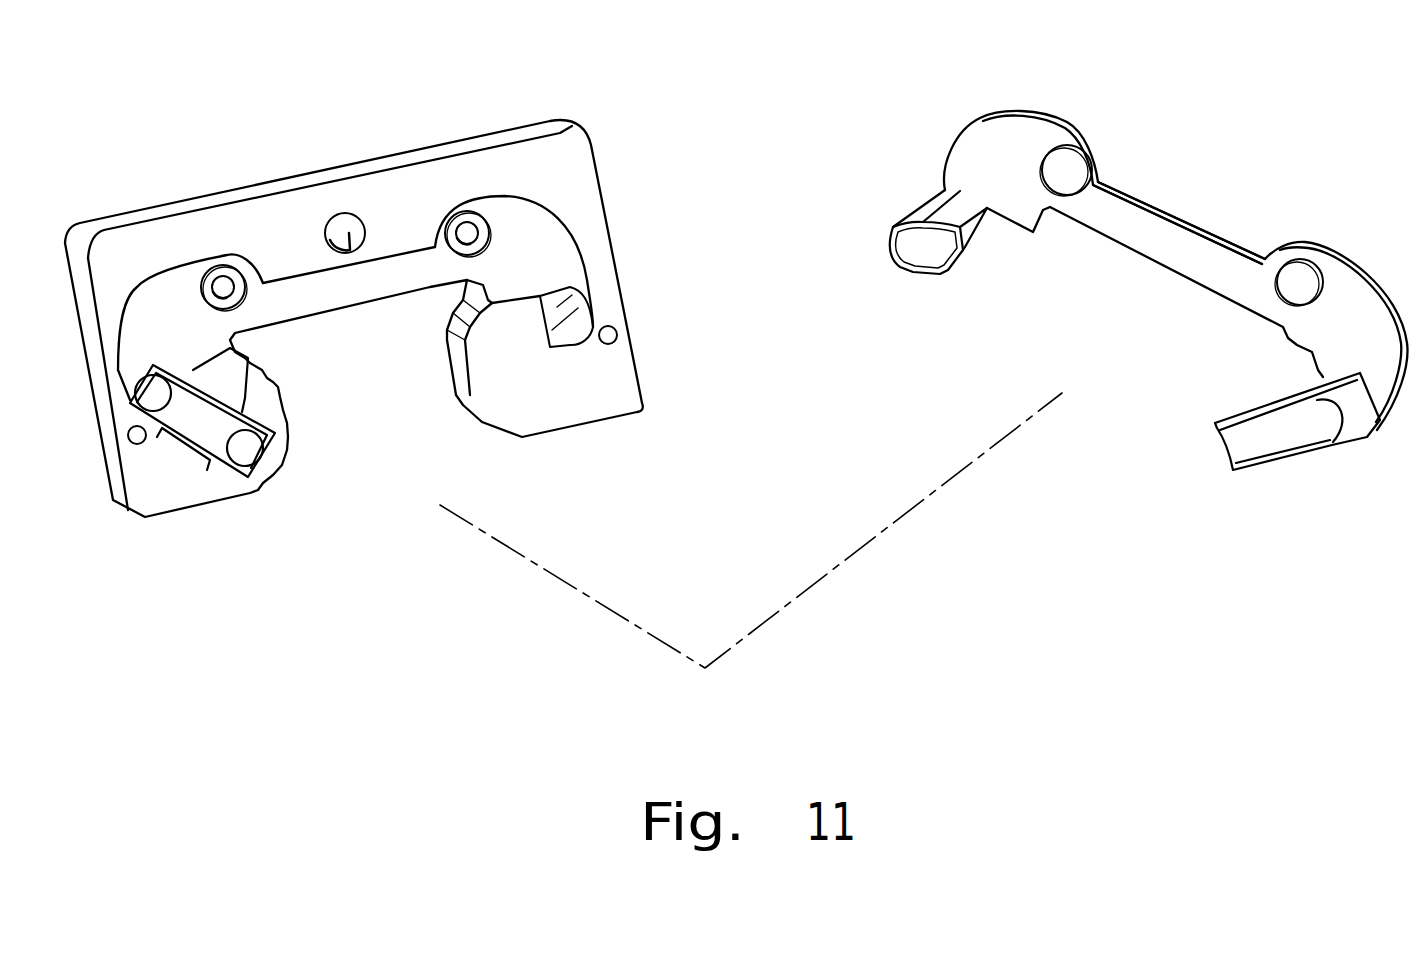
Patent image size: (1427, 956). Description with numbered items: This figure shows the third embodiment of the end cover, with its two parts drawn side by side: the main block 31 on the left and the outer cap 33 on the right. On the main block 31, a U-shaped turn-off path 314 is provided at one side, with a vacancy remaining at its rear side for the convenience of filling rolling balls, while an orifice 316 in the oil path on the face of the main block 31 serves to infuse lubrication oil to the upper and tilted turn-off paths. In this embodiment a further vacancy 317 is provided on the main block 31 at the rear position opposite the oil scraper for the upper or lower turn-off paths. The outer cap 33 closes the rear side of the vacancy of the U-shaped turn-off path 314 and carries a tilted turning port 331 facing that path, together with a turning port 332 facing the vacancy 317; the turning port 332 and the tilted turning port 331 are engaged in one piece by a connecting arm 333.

The main block 31 is at (273, 222).
The U-shaped turn-off path 314 is at (207, 423).
The orifice 316 is at (341, 233).
The vacancy 317 is at (542, 290).
The outer cap 33 is at (1360, 415).
The tilted turning port 331 is at (1273, 437).
The turning port 332 is at (920, 250).
The connecting arm 333 is at (1150, 237).